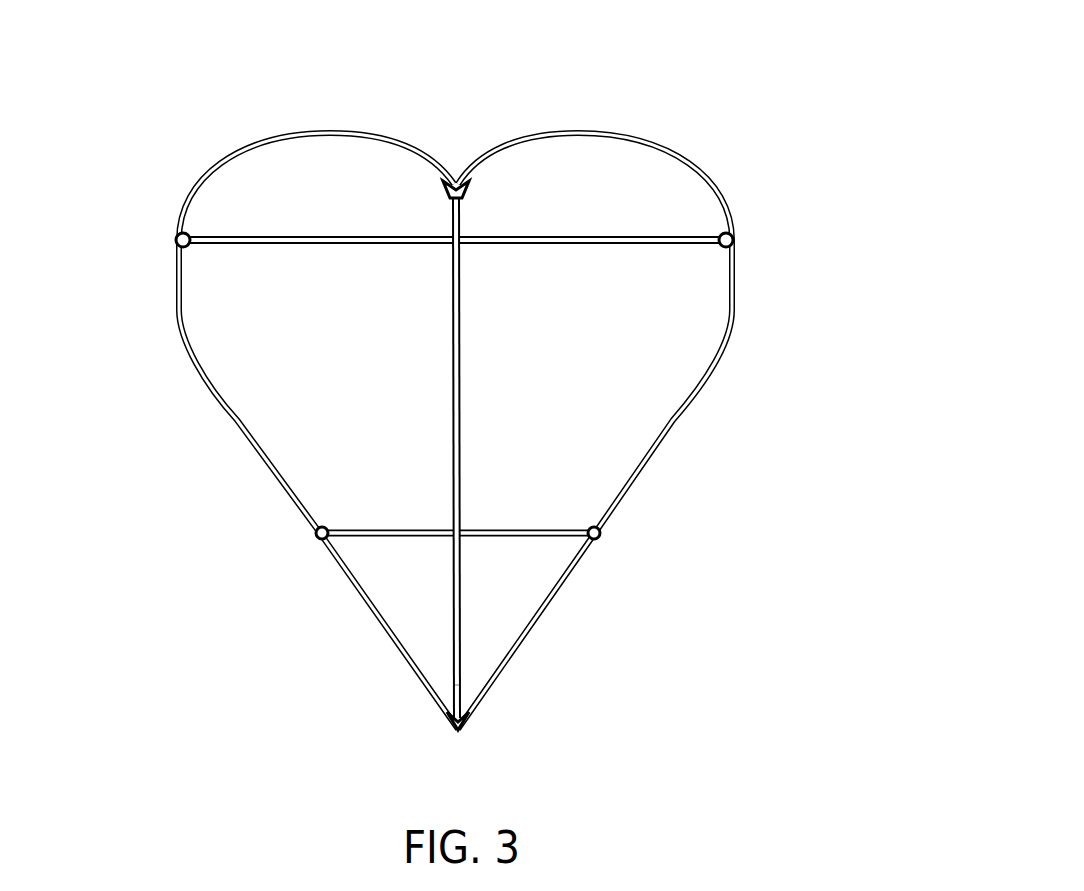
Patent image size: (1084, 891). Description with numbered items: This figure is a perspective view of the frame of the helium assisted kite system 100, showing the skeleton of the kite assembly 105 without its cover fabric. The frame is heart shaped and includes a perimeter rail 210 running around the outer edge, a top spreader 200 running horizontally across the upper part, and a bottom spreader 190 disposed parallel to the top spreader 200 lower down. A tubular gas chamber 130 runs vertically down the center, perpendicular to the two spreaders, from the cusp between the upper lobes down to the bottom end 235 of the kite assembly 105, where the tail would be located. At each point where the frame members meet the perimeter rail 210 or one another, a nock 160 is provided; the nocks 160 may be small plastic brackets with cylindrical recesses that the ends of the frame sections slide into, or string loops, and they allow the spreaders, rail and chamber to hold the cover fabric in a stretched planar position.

The helium assisted kite system 100 is at (650, 58).
The kite assembly 105 is at (680, 100).
The tubular gas chamber 130 is at (461, 378).
The nocks 160 is at (455, 180).
The bottom spreader 190 is at (475, 538).
The top spreader 200 is at (505, 245).
The perimeter rail 210 is at (233, 412).
The bottom end 235 is at (470, 690).